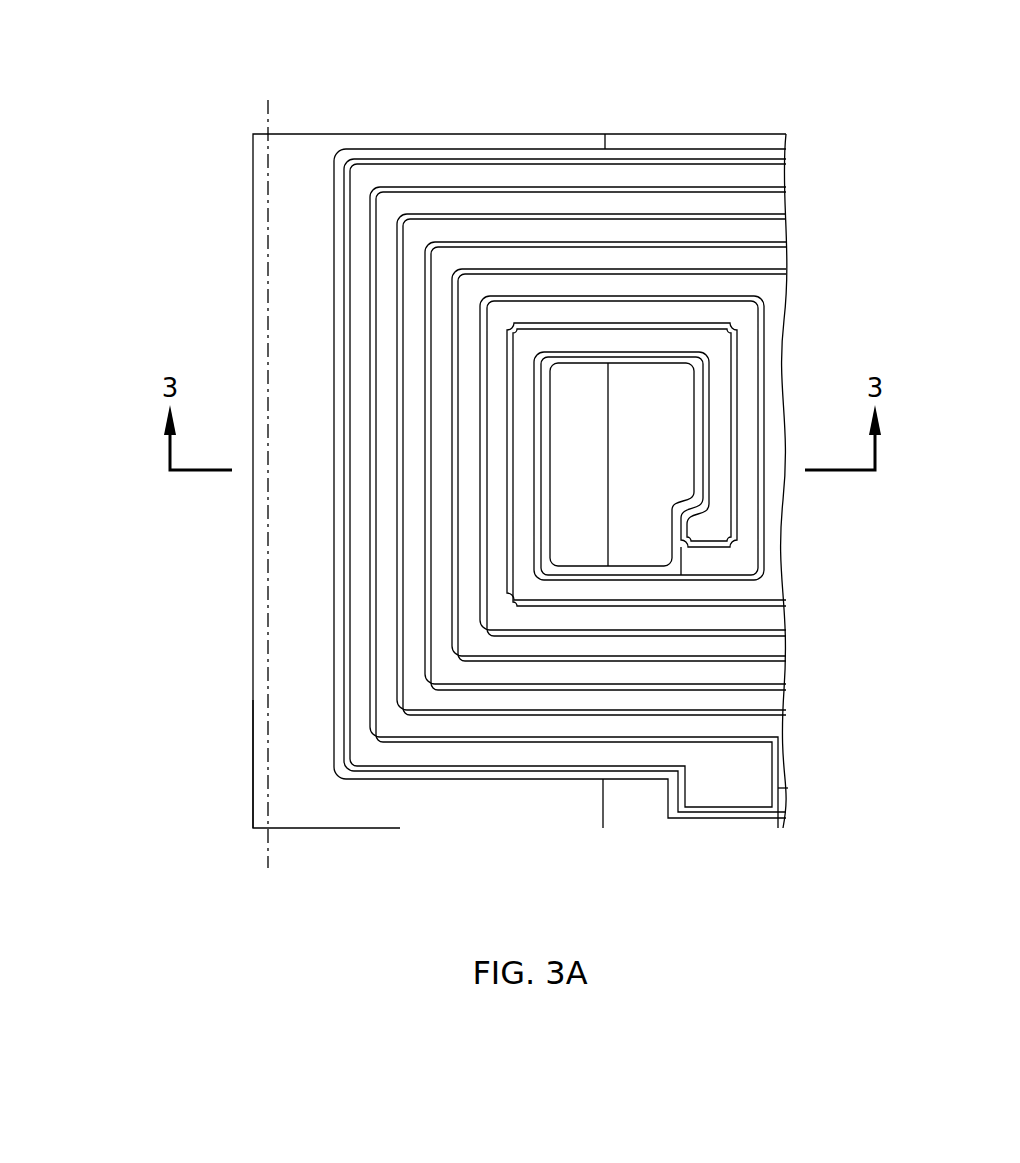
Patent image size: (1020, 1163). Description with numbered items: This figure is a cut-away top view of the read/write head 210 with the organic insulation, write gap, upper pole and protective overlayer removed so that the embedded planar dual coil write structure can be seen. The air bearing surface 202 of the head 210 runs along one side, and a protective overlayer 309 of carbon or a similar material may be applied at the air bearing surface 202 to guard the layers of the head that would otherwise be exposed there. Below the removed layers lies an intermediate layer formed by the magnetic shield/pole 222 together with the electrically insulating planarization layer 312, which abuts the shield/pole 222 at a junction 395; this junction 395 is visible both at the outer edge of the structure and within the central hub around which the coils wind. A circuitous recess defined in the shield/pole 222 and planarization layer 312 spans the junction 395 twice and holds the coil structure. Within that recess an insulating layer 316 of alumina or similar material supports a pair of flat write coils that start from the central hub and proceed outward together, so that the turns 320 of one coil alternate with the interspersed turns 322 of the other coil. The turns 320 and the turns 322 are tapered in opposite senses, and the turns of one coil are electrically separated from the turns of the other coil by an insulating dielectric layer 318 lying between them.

The read/write head 210 is at (308, 62).
The planarization layer 312 is at (527, 140).
The junction 395 is at (605, 147).
The shield/pole 222 is at (285, 213).
The air bearing surface 202 is at (267, 851).
The protective overlayer 309 is at (257, 750).
The insulating layer 316 is at (437, 777).
The layer 318 is at (728, 220).
The turns 322 is at (640, 728).
The turns 320 is at (728, 795).